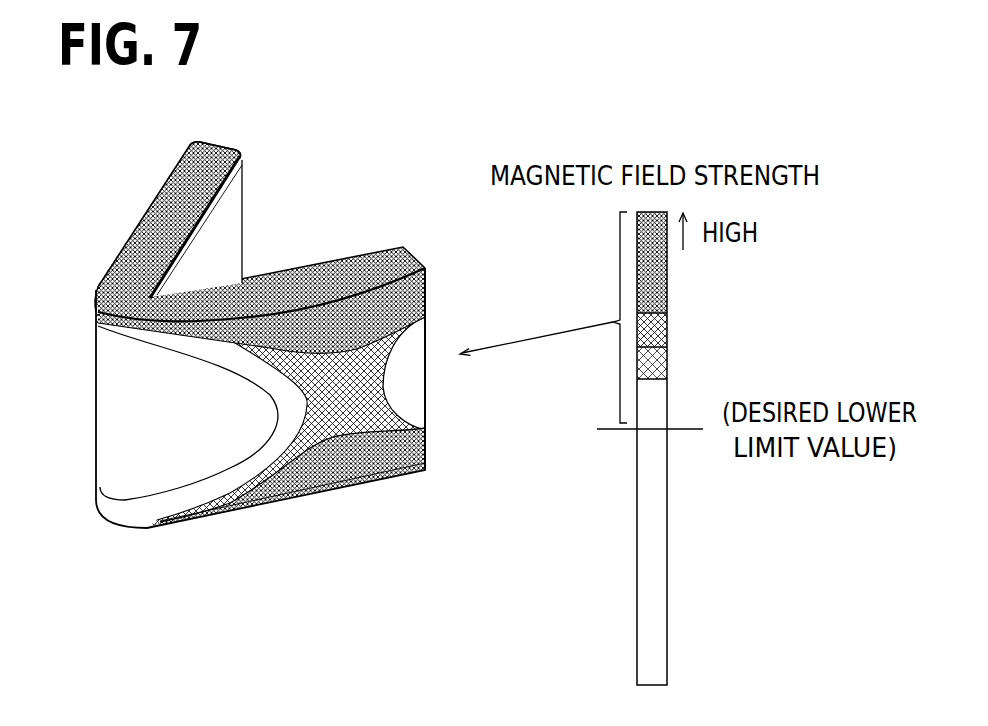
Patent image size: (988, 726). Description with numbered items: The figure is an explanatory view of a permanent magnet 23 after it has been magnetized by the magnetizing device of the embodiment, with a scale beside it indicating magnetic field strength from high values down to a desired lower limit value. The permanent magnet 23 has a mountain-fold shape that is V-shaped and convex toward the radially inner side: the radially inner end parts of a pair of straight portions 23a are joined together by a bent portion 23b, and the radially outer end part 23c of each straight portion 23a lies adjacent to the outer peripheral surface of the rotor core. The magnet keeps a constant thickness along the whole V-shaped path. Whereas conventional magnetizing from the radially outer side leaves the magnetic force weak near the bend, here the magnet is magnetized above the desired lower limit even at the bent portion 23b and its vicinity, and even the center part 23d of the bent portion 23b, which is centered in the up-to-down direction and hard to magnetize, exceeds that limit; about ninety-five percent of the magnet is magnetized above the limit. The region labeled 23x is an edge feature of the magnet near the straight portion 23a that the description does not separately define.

The permanent magnet 23 is at (259, 316).
The straight portion 23a is at (158, 195).
The bent portion 23b is at (95, 308).
The radially outer end part 23c is at (238, 128).
The center part of the bent portion 23d is at (113, 400).
The chamfered edge 23x is at (215, 210).